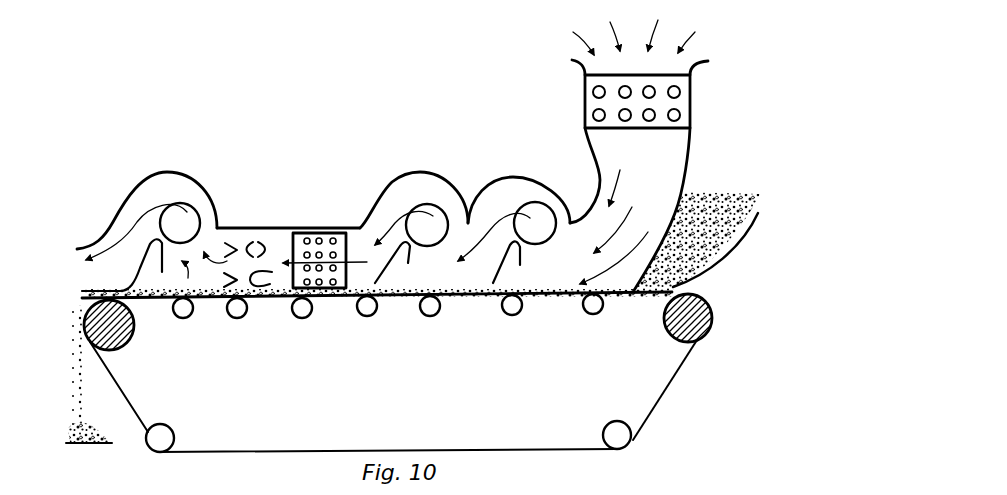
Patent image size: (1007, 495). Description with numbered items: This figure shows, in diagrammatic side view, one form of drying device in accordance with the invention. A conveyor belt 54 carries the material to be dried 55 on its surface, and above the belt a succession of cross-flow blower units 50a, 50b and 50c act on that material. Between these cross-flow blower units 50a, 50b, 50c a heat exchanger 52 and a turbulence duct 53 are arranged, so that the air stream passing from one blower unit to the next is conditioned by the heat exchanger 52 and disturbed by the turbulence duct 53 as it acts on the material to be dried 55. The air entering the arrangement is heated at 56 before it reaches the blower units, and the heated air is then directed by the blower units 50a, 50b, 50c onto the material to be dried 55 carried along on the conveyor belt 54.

The cross-flow blower unit 50a is at (512, 177).
The cross-flow blower unit 50b is at (420, 172).
The cross-flow blower unit 50c is at (170, 171).
The heat exchanger 52 is at (317, 241).
The turbulence duct 53 is at (242, 227).
The conveyor belt 54 is at (678, 373).
The material to be dried 55 is at (723, 200).
The air heating point 56 is at (683, 98).